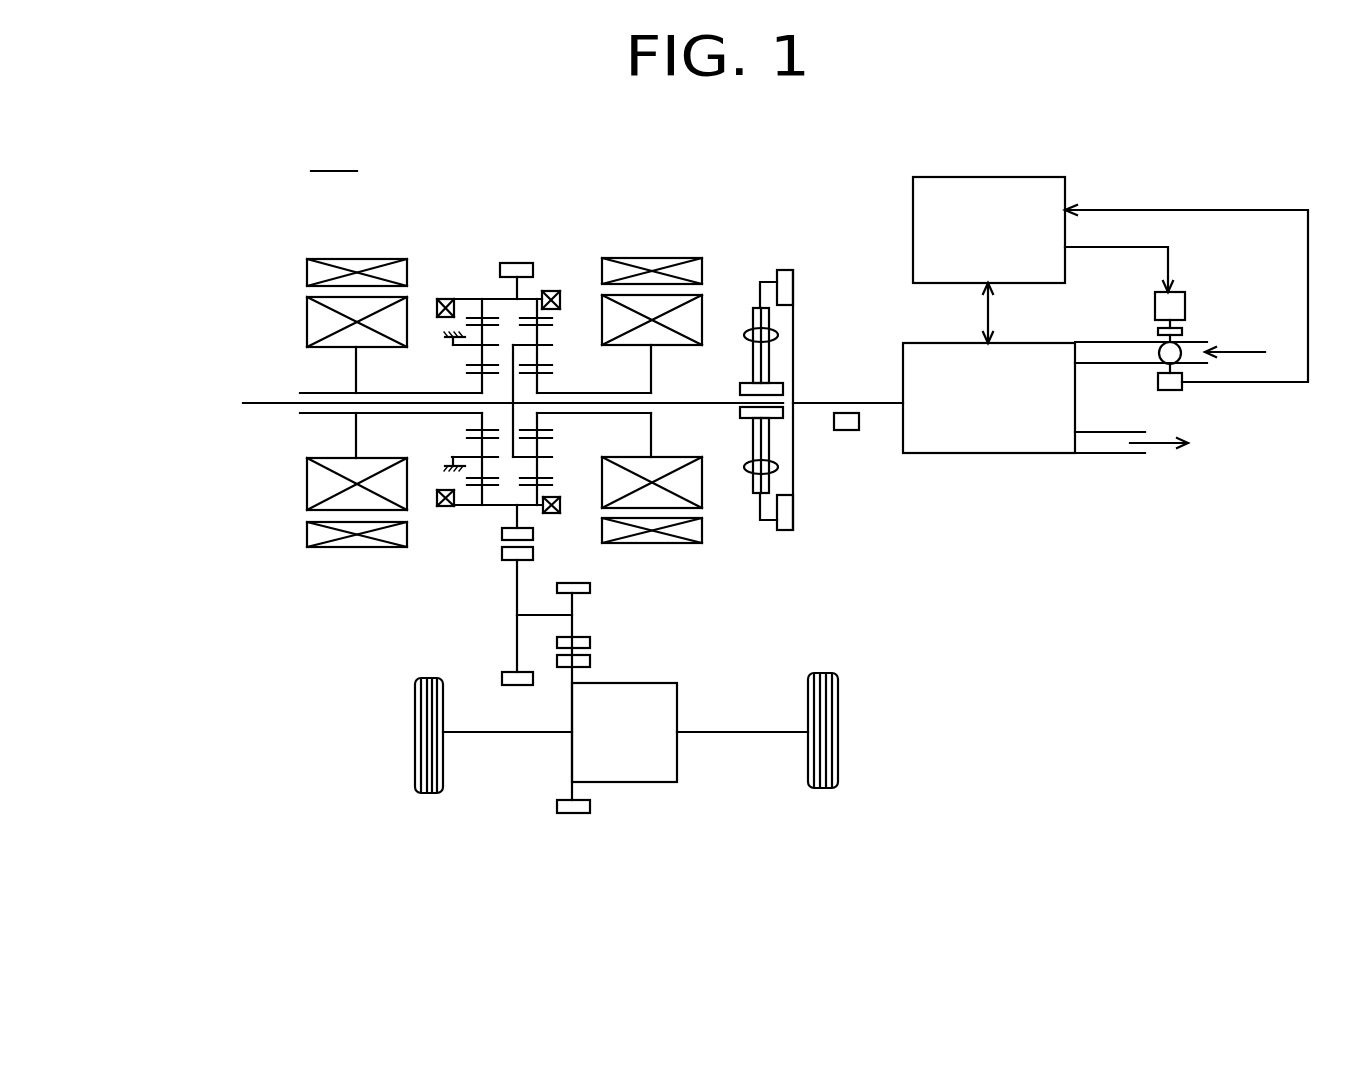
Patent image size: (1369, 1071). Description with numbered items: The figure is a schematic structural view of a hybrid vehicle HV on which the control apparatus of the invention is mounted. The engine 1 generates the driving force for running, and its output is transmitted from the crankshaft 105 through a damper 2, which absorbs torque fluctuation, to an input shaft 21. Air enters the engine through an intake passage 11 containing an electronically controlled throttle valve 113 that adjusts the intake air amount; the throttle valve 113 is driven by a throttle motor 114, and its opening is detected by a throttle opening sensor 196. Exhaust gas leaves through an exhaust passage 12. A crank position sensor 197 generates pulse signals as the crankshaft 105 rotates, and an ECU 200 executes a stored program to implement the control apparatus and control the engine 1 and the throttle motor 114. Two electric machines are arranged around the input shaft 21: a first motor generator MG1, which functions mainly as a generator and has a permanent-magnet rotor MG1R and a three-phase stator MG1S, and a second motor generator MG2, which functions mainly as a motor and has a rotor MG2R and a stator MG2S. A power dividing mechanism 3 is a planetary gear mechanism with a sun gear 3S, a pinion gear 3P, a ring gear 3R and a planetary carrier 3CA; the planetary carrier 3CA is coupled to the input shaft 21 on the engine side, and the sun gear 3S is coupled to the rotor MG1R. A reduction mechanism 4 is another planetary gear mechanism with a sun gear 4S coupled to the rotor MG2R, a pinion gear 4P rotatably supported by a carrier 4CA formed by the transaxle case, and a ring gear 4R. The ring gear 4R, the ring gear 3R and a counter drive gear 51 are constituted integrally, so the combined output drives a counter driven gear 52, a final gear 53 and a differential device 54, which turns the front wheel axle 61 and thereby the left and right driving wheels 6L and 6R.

The engine 1 is at (1015, 455).
The damper 2 is at (797, 512).
The power dividing mechanism 3 is at (528, 374).
The ring gear 3R is at (540, 299).
The pinion gear 3P is at (548, 363).
The sun gear 3S is at (552, 373).
The planetary carrier 3CA is at (508, 462).
The reduction mechanism 4 is at (472, 389).
The ring gear 4R is at (497, 299).
The pinion gear 4P is at (470, 445).
The sun gear 4S is at (470, 372).
The carrier (transaxle case) 4CA is at (452, 457).
The intake passage 11 is at (1113, 350).
The exhaust passage 12 is at (1107, 445).
The input shaft 21 is at (698, 400).
The counter drive gear 51 is at (520, 518).
The counter driven gear 52 is at (515, 598).
The final gear 53 is at (578, 603).
The differential device 54 is at (637, 783).
The front wheel axle (drive shaft) 61 is at (495, 737).
The left driving wheel 6L is at (415, 698).
The right driving wheel 6R is at (840, 690).
The crankshaft 105 is at (840, 398).
The throttle valve 113 is at (1192, 330).
The throttle motor 114 is at (1180, 292).
The throttle opening sensor 196 is at (1170, 392).
The crank position sensor 197 is at (847, 430).
The ECU 200 is at (1025, 177).
The first motor generator MG1 is at (748, 356).
The stator MG1S is at (664, 258).
The rotor MG1R is at (703, 308).
The second motor generator MG2 is at (249, 388).
The stator MG2S is at (307, 262).
The rotor MG2R is at (307, 303).
The hybrid vehicle HV is at (334, 157).